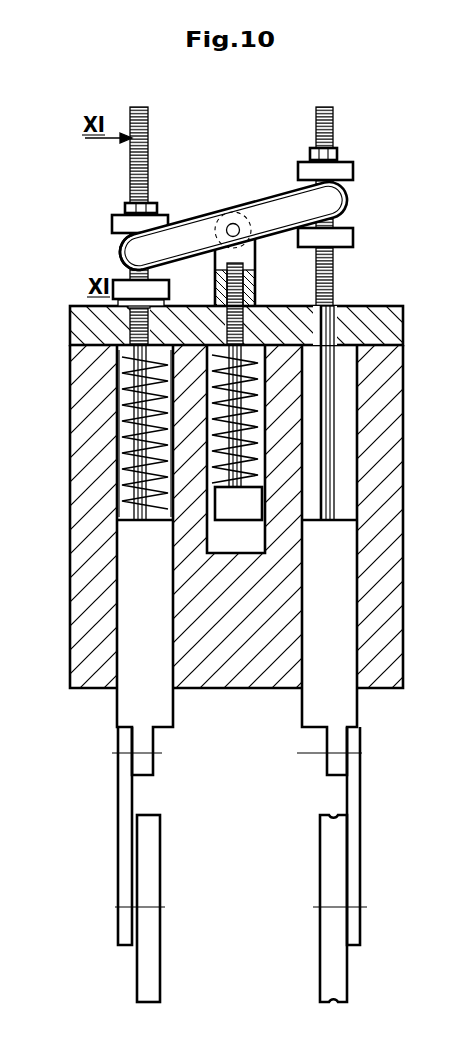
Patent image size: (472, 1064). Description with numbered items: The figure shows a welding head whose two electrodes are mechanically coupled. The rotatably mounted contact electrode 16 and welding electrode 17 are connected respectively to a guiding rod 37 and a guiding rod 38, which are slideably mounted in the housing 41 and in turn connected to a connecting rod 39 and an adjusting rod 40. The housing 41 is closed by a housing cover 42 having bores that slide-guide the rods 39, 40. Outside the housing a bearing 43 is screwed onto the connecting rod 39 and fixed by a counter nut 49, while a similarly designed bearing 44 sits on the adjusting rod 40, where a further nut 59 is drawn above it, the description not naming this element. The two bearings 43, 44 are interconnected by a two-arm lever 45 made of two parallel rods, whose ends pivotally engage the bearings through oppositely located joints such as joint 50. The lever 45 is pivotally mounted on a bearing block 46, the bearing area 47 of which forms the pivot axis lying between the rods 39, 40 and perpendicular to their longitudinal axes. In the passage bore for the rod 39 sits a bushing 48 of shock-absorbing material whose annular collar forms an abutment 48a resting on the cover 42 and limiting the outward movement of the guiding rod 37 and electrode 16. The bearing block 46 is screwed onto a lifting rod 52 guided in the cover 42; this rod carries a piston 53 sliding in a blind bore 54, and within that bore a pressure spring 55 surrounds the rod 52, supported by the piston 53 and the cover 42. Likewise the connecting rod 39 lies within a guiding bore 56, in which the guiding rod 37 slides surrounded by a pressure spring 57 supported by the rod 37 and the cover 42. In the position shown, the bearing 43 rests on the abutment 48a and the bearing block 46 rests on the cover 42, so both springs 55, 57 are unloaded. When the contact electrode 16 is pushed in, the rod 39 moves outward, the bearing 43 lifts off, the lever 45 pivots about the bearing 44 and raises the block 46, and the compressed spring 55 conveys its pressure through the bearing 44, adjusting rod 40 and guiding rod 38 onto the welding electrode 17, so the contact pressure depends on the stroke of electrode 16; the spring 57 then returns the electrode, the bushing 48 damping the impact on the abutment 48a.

The contact electrode 16 is at (147, 977).
The welding electrode 17 is at (338, 977).
The guiding rod 37 is at (130, 643).
The guiding rod 38 is at (347, 613).
The connecting rod 39 is at (138, 442).
The adjusting rod 40 is at (328, 457).
The housing 41 is at (393, 530).
The housing cover 42 is at (373, 312).
The bearing 43 is at (118, 220).
The bearing 44 is at (347, 170).
The lever 45 is at (192, 230).
The bearing block 46 is at (255, 253).
The bearing area 47 is at (234, 223).
The bushing 48 is at (128, 342).
The abutment 48a is at (87, 327).
The counter nut 49 is at (130, 208).
The joint 50 is at (119, 249).
The lifting rod 52 is at (250, 292).
The piston 53 is at (244, 503).
The blind bore 54 is at (220, 530).
The pressure spring 55 is at (248, 463).
The guiding bore 56 is at (120, 483).
The pressure spring 57 is at (130, 390).
The nut 59 is at (337, 155).